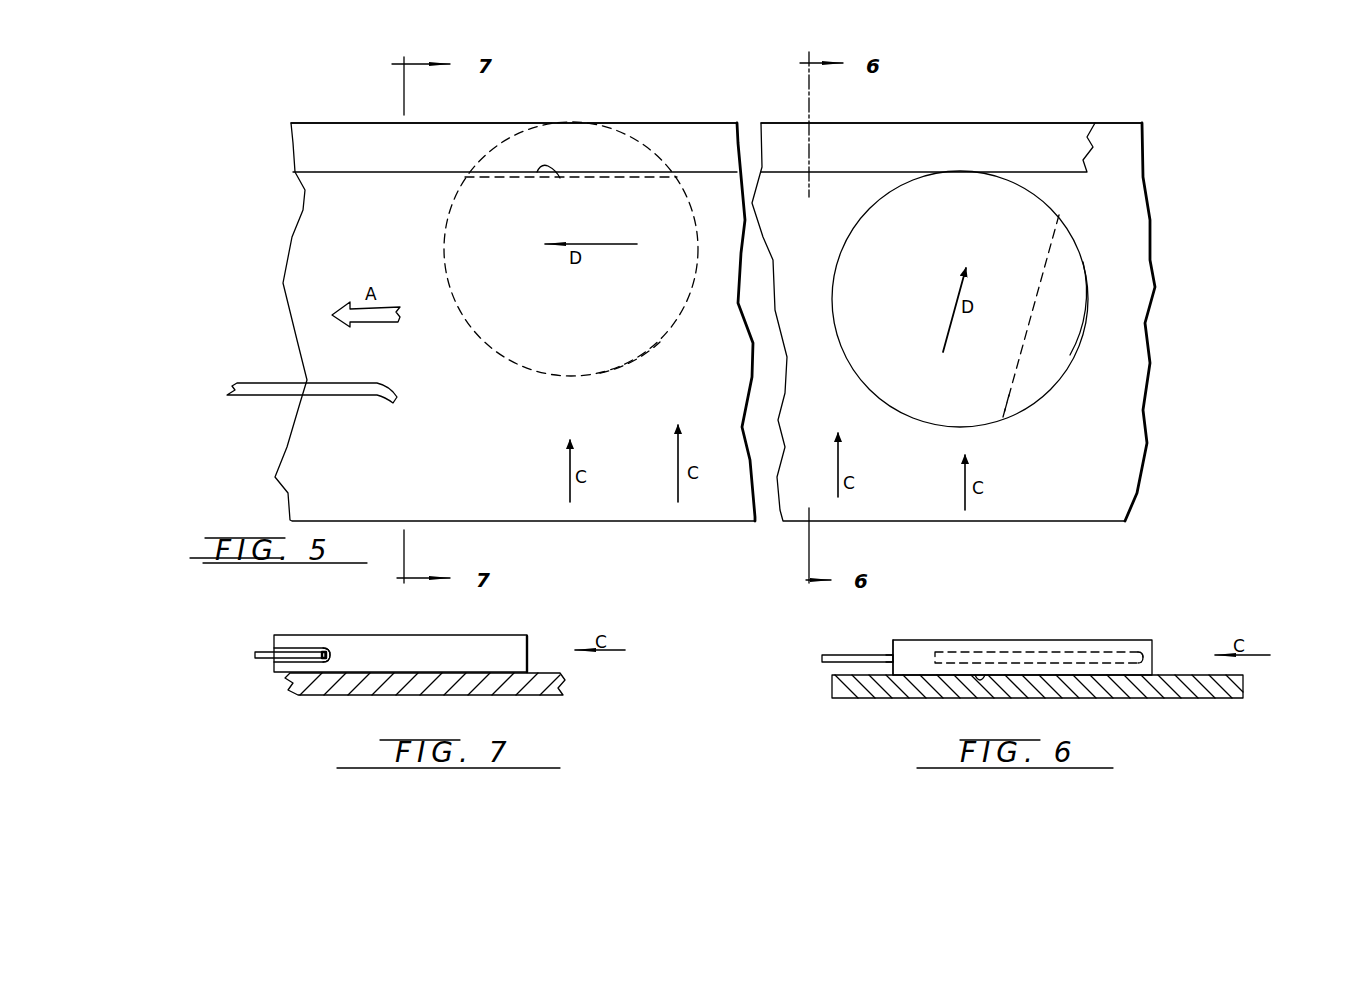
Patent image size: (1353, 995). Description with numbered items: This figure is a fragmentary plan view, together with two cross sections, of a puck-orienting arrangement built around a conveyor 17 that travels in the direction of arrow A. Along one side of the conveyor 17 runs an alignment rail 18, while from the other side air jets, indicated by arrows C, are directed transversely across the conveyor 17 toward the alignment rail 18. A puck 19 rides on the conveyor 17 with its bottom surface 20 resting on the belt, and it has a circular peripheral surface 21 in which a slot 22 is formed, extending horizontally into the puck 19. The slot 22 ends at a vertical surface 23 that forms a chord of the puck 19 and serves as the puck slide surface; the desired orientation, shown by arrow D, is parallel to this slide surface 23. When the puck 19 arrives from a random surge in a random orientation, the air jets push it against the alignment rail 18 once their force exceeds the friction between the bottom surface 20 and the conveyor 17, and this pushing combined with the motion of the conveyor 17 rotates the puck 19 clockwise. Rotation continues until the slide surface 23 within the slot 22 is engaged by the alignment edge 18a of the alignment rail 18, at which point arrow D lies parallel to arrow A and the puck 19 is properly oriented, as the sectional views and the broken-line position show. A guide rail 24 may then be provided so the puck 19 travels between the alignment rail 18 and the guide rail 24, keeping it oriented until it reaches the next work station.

In FIG. 5, the conveyor 17 is at (1153, 302).
In FIG. 7, the conveyor 17 is at (420, 690).
In FIG. 6, the conveyor 17 is at (1093, 698).
In FIG. 5, the alignment rail 18 is at (829, 163).
In FIG. 7, the alignment rail 18 is at (262, 653).
In FIG. 6, the alignment rail 18 is at (860, 658).
In FIG. 5, the alignment edge 18a is at (777, 173).
In FIG. 7, the alignment edge 18a is at (321, 650).
In FIG. 6, the alignment edge 18a is at (888, 657).
In FIG. 5, the puck 19 is at (570, 348).
In FIG. 7, the puck 19 is at (415, 645).
In FIG. 6, the puck 19 is at (1150, 642).
In FIG. 6, the bottom surface 20 is at (988, 678).
In FIG. 5, the circular peripheral surface 21 is at (640, 353).
In FIG. 7, the circular peripheral surface 21 is at (510, 645).
In FIG. 6, the circular peripheral surface 21 is at (903, 650).
In FIG. 5, the slot 22 is at (608, 152).
In FIG. 7, the slot 22 is at (307, 646).
In FIG. 6, the slot 22 is at (1023, 652).
In FIG. 5, the puck slide surface 23 is at (537, 172).
In FIG. 7, the puck slide surface 23 is at (333, 653).
In FIG. 6, the puck slide surface 23 is at (1047, 660).
In FIG. 5, the guide rail 24 is at (262, 382).